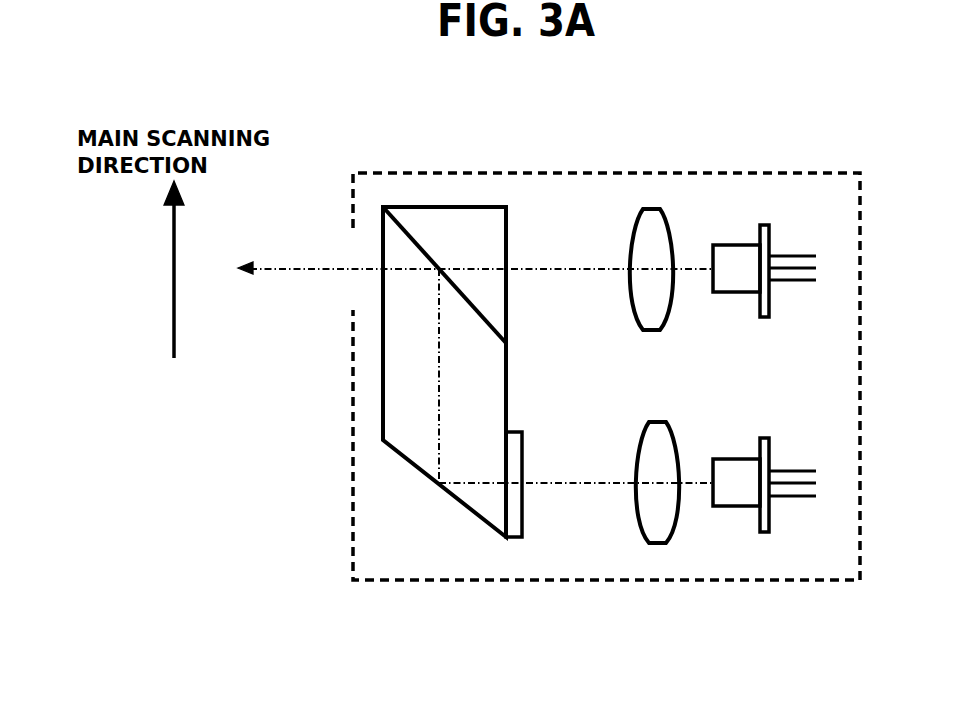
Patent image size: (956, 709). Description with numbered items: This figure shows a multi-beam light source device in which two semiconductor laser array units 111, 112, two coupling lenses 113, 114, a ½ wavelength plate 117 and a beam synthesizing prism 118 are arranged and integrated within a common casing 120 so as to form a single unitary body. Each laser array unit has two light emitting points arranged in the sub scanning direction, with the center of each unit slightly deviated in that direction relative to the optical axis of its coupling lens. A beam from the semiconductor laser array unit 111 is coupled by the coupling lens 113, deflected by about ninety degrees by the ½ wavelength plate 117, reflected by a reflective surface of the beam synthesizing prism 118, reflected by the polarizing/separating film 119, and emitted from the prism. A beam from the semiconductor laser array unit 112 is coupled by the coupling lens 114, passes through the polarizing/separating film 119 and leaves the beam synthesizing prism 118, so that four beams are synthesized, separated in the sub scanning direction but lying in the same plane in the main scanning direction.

The semiconductor laser array unit 111 is at (735, 506).
The semiconductor laser array unit 112 is at (735, 245).
The coupling lens 113 is at (648, 517).
The coupling lens 114 is at (630, 225).
The ½ wavelength plate 117 is at (520, 431).
The beam synthesizing prism 118 is at (393, 353).
The polarizing/separating film 119 is at (418, 242).
The common casing 120 is at (803, 171).